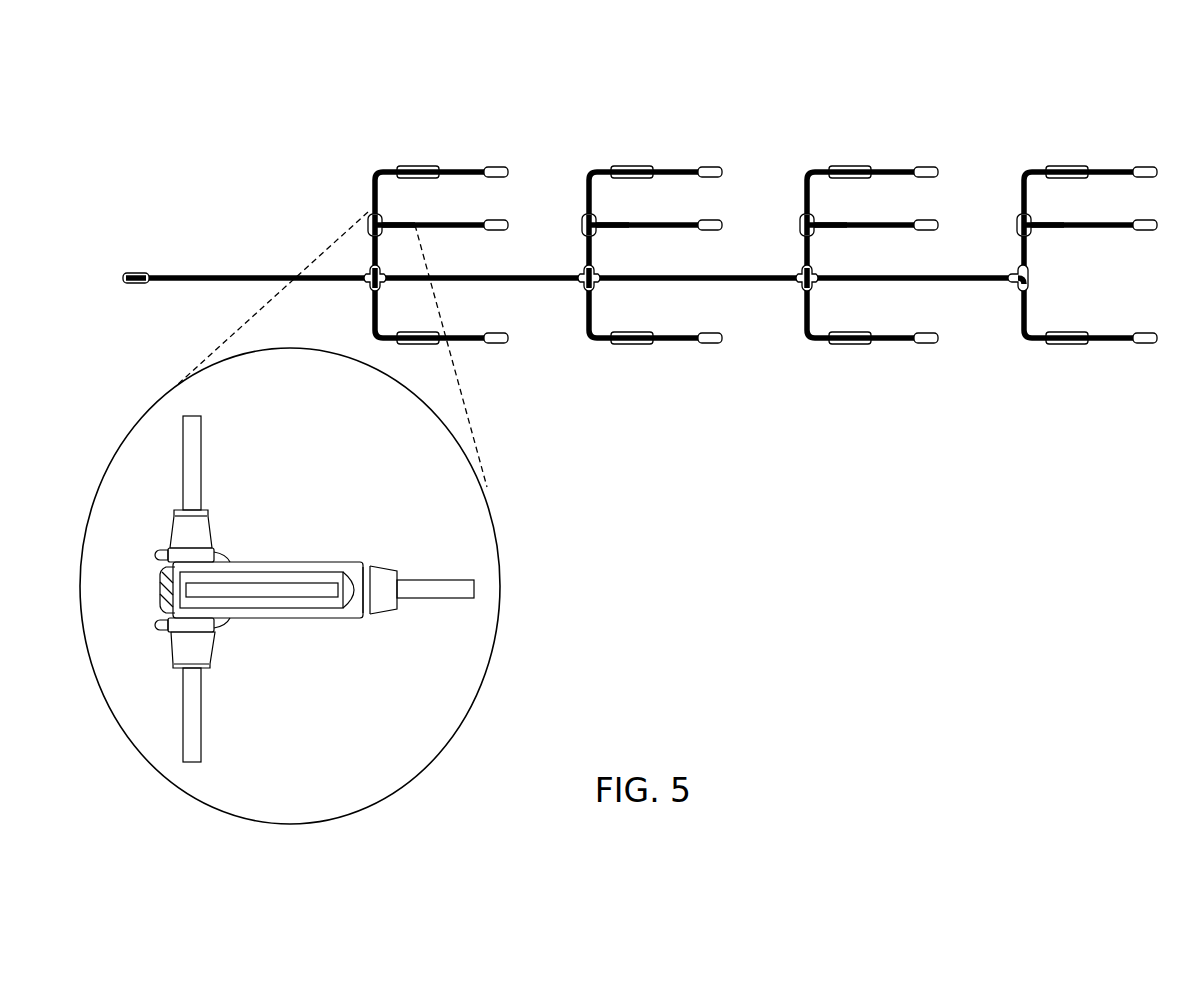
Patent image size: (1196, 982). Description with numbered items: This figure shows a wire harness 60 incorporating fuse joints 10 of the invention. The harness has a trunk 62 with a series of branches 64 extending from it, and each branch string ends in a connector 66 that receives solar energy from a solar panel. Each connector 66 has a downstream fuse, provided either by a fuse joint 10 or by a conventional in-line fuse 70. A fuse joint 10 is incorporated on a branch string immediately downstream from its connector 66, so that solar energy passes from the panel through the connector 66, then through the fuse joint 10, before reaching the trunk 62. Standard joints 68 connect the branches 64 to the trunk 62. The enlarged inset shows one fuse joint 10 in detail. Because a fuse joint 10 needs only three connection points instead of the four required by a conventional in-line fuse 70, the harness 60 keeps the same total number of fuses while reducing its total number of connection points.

The fuse joint 10 is at (585, 222).
The wire harness 60 is at (338, 155).
The trunk 62 is at (210, 273).
The branch 64 is at (368, 311).
The connector 66 is at (702, 162).
The standard joint 68 is at (817, 287).
The in-line fuse 70 is at (632, 338).